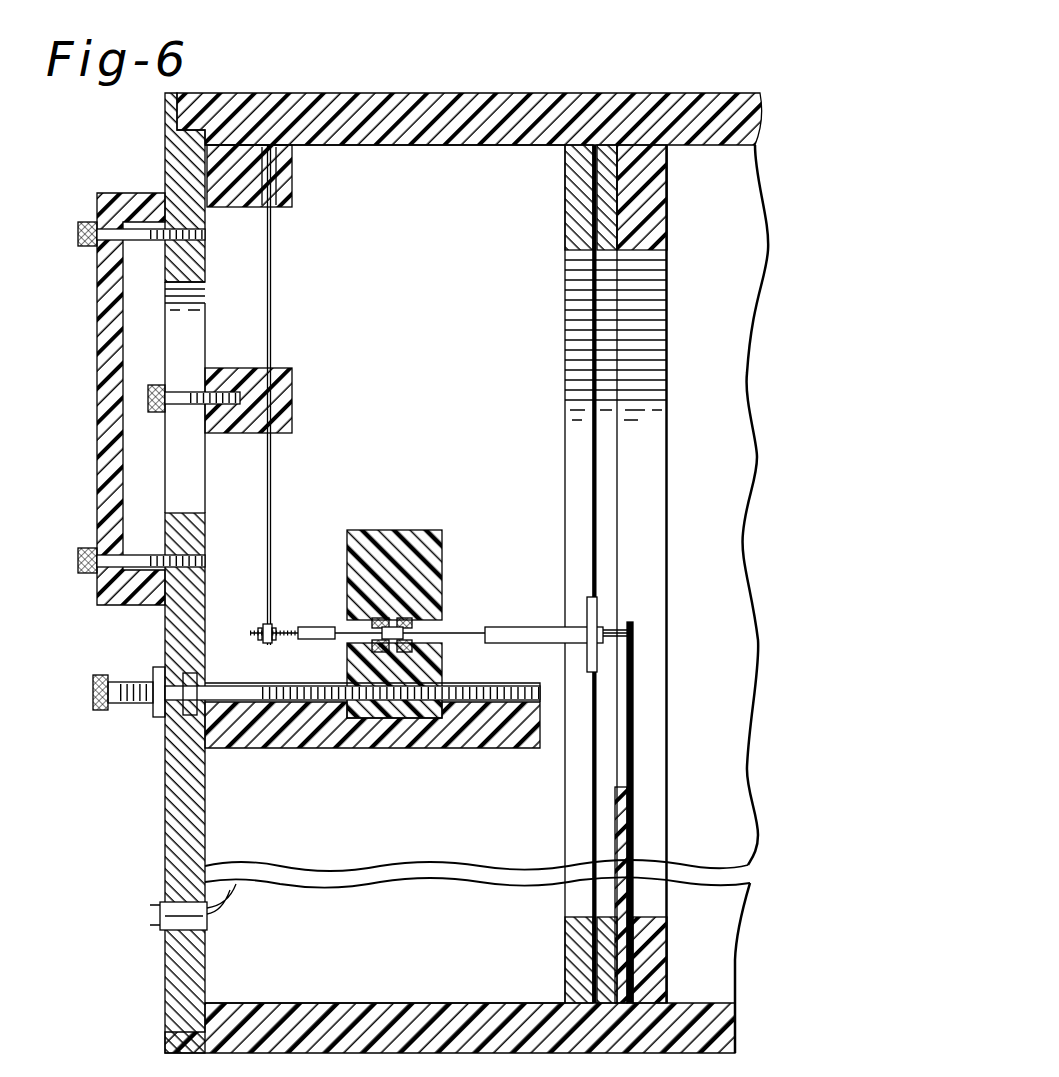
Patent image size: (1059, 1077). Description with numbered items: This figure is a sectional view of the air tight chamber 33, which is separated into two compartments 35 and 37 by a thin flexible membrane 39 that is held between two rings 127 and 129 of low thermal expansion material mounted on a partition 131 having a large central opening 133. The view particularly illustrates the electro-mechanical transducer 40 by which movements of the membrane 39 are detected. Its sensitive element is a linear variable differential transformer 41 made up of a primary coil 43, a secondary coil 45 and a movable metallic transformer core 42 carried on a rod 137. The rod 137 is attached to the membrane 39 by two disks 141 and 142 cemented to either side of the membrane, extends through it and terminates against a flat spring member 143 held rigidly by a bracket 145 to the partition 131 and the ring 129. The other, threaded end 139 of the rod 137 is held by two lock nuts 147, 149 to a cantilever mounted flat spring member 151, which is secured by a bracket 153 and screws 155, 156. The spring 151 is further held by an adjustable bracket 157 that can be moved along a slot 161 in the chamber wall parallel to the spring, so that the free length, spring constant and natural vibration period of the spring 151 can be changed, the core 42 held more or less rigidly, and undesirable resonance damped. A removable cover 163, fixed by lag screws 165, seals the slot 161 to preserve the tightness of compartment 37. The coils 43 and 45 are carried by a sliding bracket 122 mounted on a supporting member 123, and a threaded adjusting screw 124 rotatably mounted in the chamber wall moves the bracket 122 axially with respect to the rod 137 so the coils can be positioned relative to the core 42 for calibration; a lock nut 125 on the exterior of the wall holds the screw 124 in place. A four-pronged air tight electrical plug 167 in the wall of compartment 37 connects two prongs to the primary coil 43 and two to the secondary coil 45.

The air tight chamber 33 is at (543, 88).
The compartment 35 is at (732, 309).
The compartment 37 is at (456, 339).
The membrane 39 is at (567, 430).
The electro-mechanical transducer 40 is at (437, 597).
The linear variable differential transformer 41 is at (410, 620).
The transformer core 42 is at (392, 652).
The primary coil 43 is at (372, 625).
The secondary coil 45 is at (414, 628).
The sliding bracket 122 is at (376, 538).
The supporting member 123 is at (440, 750).
The adjusting screw 124 is at (108, 678).
The lock nut 125 is at (160, 666).
The ring 127 is at (578, 214).
The ring 129 is at (603, 178).
The partition 131 is at (660, 937).
The opening 133 is at (660, 485).
The rod 137 is at (548, 622).
The threaded end of rod 139 is at (262, 630).
The disk 141 is at (597, 612).
The disk 142 is at (587, 606).
The flat spring member 143 is at (633, 722).
The bracket 145 is at (622, 835).
The lock nut 147 is at (262, 645).
The lock nut 149 is at (276, 645).
The cantilever mounted flat spring member 151 is at (272, 500).
The bracket 153 is at (246, 200).
The screw 155 is at (294, 186).
The screw 156 is at (168, 182).
The adjustable bracket 157 is at (300, 374).
The slot 161 is at (190, 347).
The removable cover 163 is at (108, 487).
The lag screws 165 is at (86, 226).
The electrical plug 167 is at (168, 905).